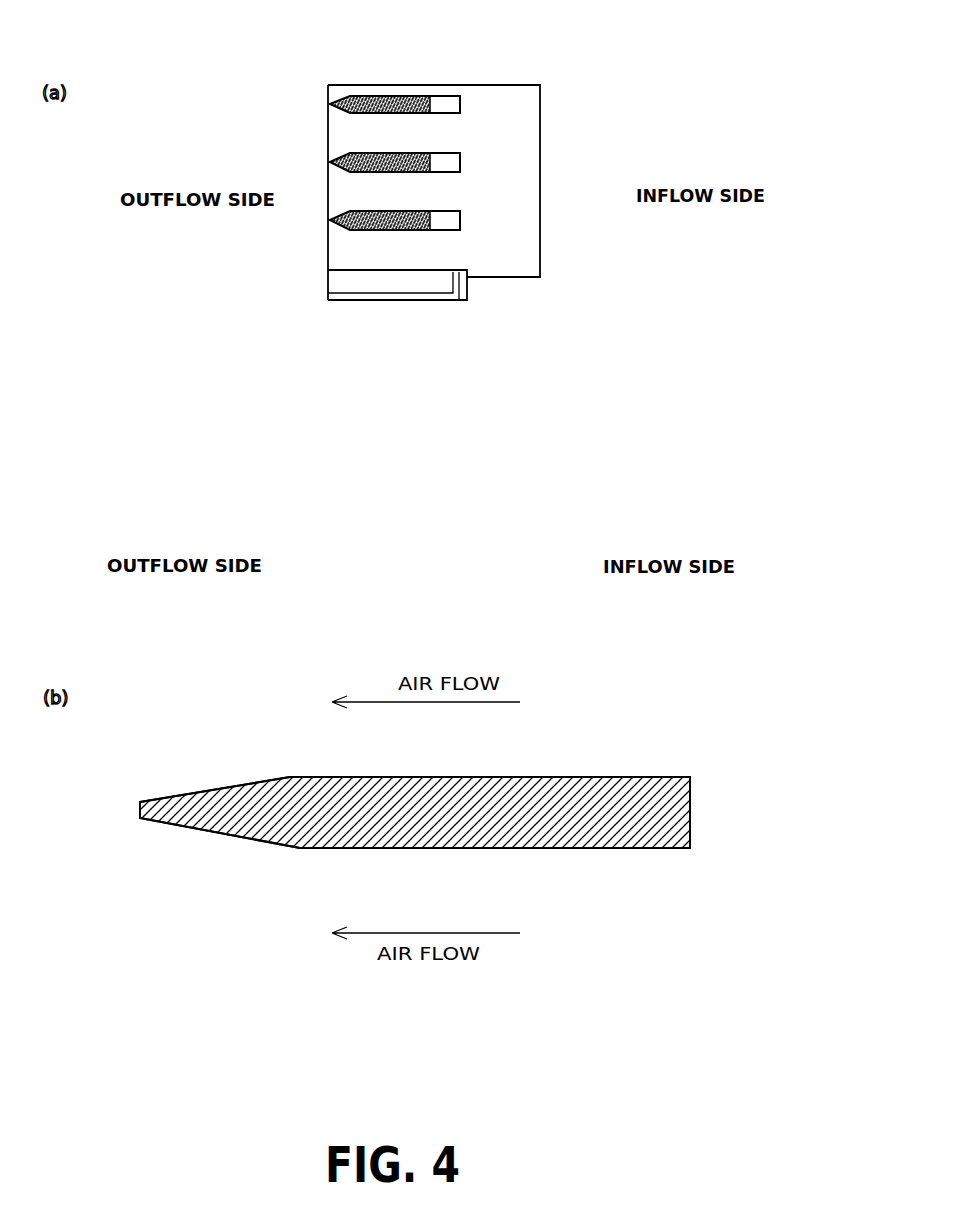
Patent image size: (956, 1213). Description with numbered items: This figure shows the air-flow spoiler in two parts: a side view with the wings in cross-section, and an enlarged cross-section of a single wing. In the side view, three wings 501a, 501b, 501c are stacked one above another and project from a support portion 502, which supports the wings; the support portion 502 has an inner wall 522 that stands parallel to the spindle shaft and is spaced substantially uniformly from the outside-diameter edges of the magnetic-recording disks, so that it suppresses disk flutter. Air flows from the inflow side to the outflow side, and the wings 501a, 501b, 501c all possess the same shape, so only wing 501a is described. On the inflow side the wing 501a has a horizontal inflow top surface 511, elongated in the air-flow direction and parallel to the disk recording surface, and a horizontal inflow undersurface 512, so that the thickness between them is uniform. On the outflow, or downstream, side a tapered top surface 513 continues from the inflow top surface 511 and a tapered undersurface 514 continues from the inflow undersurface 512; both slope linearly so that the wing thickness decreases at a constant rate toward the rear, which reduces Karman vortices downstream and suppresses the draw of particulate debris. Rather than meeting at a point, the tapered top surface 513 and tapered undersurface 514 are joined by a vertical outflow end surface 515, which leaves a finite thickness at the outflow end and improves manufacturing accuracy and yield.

The wing 501a is at (445, 97).
The wing 501b is at (462, 164).
The wing 501c is at (460, 231).
The support portion 502 is at (542, 137).
The inner wall 522 is at (530, 242).
The inflow top surface 511 is at (593, 778).
The inflow undersurface 512 is at (660, 850).
The tapered top surface 513 is at (237, 782).
The tapered undersurface 514 is at (241, 840).
The outflow end surface 515 is at (140, 810).